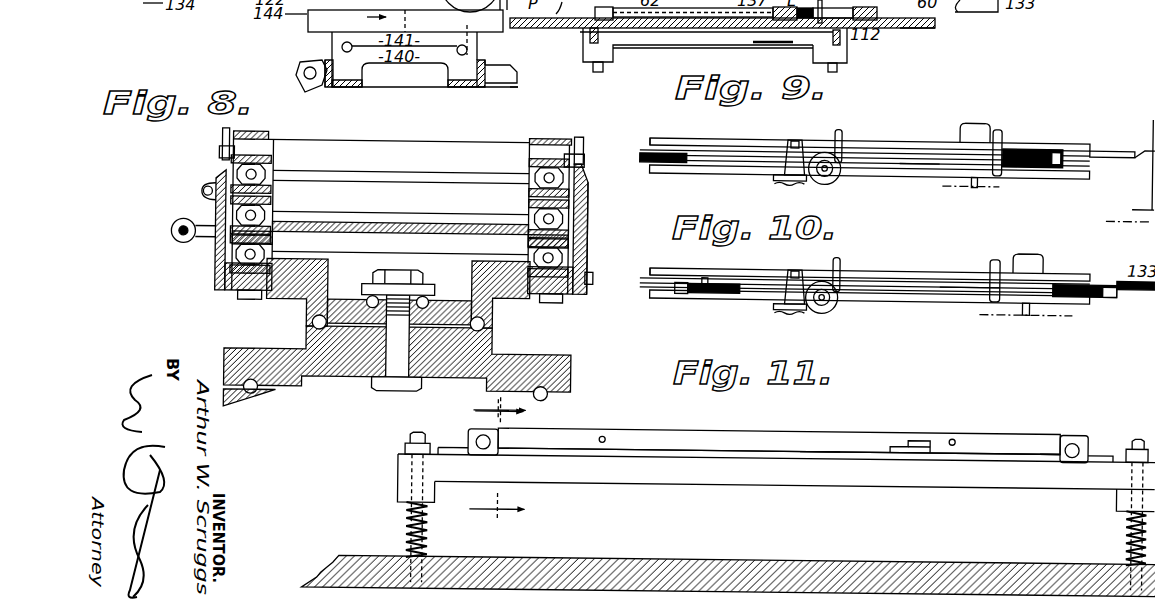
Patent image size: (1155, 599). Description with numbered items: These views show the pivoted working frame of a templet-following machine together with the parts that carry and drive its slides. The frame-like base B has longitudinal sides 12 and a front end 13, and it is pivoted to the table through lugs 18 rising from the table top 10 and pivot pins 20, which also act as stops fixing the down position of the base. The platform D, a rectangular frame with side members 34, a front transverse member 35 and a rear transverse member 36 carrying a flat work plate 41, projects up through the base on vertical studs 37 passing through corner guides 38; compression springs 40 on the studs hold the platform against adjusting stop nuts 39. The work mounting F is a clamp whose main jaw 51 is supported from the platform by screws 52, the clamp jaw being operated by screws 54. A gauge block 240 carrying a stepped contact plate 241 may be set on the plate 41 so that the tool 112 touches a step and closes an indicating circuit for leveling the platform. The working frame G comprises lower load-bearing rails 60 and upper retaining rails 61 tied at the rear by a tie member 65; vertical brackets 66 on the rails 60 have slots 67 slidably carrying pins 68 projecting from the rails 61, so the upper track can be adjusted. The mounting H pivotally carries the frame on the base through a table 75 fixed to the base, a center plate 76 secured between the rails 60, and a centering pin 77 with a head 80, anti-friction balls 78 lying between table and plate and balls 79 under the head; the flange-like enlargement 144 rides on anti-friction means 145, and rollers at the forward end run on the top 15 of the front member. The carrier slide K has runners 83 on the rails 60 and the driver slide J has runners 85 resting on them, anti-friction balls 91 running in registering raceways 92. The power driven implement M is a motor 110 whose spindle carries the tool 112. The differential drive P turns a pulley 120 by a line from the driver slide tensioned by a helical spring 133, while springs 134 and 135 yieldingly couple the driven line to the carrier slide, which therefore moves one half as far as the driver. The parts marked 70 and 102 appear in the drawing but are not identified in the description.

In FIG. 11, the top of the table 10 is at (757, 549).
In FIG. 8, the sides of the base 12 is at (496, 42).
In FIG. 9, the front end of the base 13 is at (713, 54).
In FIG. 8, the top of the forward member of the base 15 is at (490, 406).
In FIG. 11, the top of the forward member of the base 15 is at (492, 457).
In FIG. 8, the lugs 18 is at (292, 78).
In FIG. 8, the pivot pins 20 is at (305, 67).
In FIG. 9, the side members 34 is at (683, 40).
In FIG. 9, the front transverse member 35 is at (844, 46).
In FIG. 9, the rear transverse member 36 is at (590, 38).
In FIG. 11, the rear transverse member 36 is at (747, 482).
In FIG. 11, the vertical studs 37 is at (430, 531).
In FIG. 11, the guides 38 is at (398, 490).
In FIG. 11, the adjusting stop nuts 39 is at (403, 446).
In FIG. 11, the compression springs 40 is at (407, 523).
In FIG. 11, the work carrying plate 41 is at (750, 443).
In FIG. 9, the main jaw 51 is at (786, 37).
In FIG. 11, the main jaw 51 is at (690, 428).
In FIG. 11, the screws 52 is at (500, 437).
In FIG. 9, the screws 54 is at (878, 14).
In FIG. 11, the screws 54 is at (606, 434).
In FIG. 8, the load-bearing rails 60 is at (568, 297).
In FIG. 9, the load-bearing rails 60 is at (662, 168).
In FIG. 10, the load-bearing rails 60 is at (889, 298).
In FIG. 9, the guide or retaining rails 61 is at (706, 138).
In FIG. 10, the guide or retaining rails 61 is at (905, 265).
In FIG. 8, the transverse tie member 65 is at (432, 140).
In FIG. 8, the vertical guide brackets 66 is at (582, 140).
In FIG. 9, the vertical guide brackets 66 is at (808, 126).
In FIG. 8, the vertical slots or guideways 67 is at (221, 135).
In FIG. 8, the pins 68 is at (218, 156).
In FIG. 9, the post 70 is at (845, 135).
In FIG. 8, the table 75 is at (495, 343).
In FIG. 8, the center plate 76 is at (310, 300).
In FIG. 8, the centering pin 77 is at (408, 357).
In FIG. 8, the anti-friction balls 78 is at (312, 323).
In FIG. 8, the anti-friction balls 79 is at (493, 298).
In FIG. 8, the head 80 is at (420, 285).
In FIG. 8, the runners 83 is at (597, 243).
In FIG. 8, the runners 85 is at (588, 192).
In FIG. 8, the anti-friction balls 91 is at (272, 215).
In FIG. 8, the grooves or raceways 92 is at (272, 176).
In FIG. 9, the member 102 is at (1152, 205).
In FIG. 9, the motor 110 is at (958, 133).
In FIG. 10, the motor 110 is at (1045, 259).
In FIG. 9, the cutter or tool 112 is at (973, 184).
In FIG. 10, the cutter or tool 112 is at (1026, 313).
In FIG. 8, the differential pulley 120 is at (556, 14).
In FIG. 9, the differential pulley 120 is at (813, 183).
In FIG. 10, the differential pulley 120 is at (809, 311).
In FIG. 9, the helical tension spring 133 is at (1032, 146).
In FIG. 8, the helical tension spring 134 is at (183, 221).
In FIG. 9, the helical tension spring 134 is at (645, 172).
In FIG. 10, the helical tension spring 134 is at (707, 300).
In FIG. 9, the helical tension spring 135 is at (1046, 166).
In FIG. 10, the helical tension spring 135 is at (1099, 294).
In FIG. 8, the flange-like enlargement 144 is at (258, 350).
In FIG. 8, the anti-friction means 145 is at (550, 394).
In FIG. 11, the gauge block 240 is at (903, 438).
In FIG. 11, the contact plate 241 is at (930, 440).
In FIG. 8, the base B is at (518, 81).
In FIG. 9, the platform D is at (913, 29).
In FIG. 11, the platform D is at (831, 442).
In FIG. 11, the work mounting F is at (1037, 429).
In FIG. 8, the working frame G is at (265, 135).
In FIG. 9, the working frame G is at (683, 136).
In FIG. 10, the working frame G is at (677, 266).
In FIG. 8, the mounting means H is at (497, 321).
In FIG. 9, the mounting means H is at (773, 180).
In FIG. 10, the mounting means H is at (773, 308).
In FIG. 9, the driver slide J is at (1113, 147).
In FIG. 9, the carrier slide K is at (920, 164).
In FIG. 10, the carrier slide K is at (955, 292).
In FIG. 9, the power driven implement M is at (978, 121).
In FIG. 10, the power driven implement M is at (1031, 251).
In FIG. 9, the differential drive P is at (826, 144).
In FIG. 10, the differential drive P is at (824, 273).